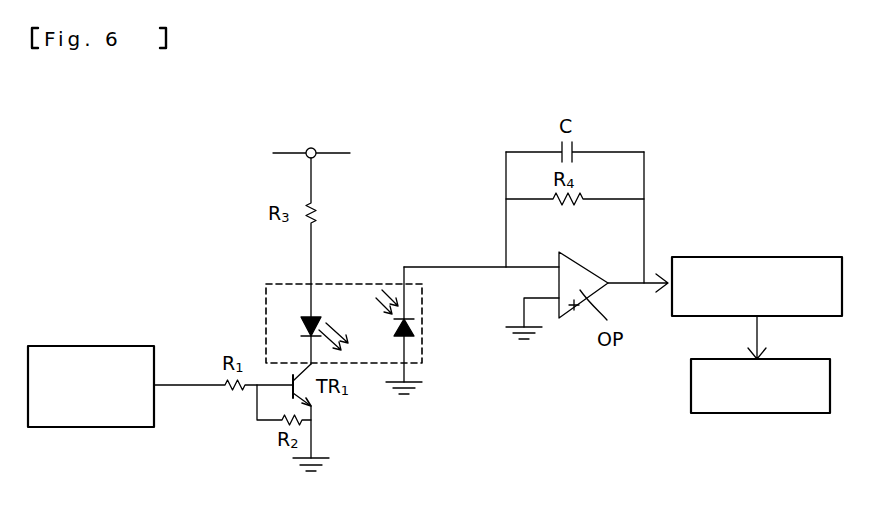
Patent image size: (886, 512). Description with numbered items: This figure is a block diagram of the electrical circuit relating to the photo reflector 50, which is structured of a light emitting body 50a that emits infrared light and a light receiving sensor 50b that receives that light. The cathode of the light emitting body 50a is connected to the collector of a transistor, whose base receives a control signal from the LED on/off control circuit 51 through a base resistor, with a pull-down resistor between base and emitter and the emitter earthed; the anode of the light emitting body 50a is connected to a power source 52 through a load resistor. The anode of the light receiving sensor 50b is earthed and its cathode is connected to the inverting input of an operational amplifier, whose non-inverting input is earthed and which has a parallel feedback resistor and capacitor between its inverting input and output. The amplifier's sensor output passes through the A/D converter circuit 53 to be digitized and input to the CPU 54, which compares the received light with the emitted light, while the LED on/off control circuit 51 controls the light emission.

The photo reflector 50 is at (350, 283).
The light emitting body 50a is at (304, 334).
The light receiving sensor 50b is at (408, 326).
The LED on/off control circuit 51 is at (103, 345).
The power source 52 is at (314, 148).
The A/D converter circuit 53 is at (787, 256).
The CPU 54 is at (787, 358).